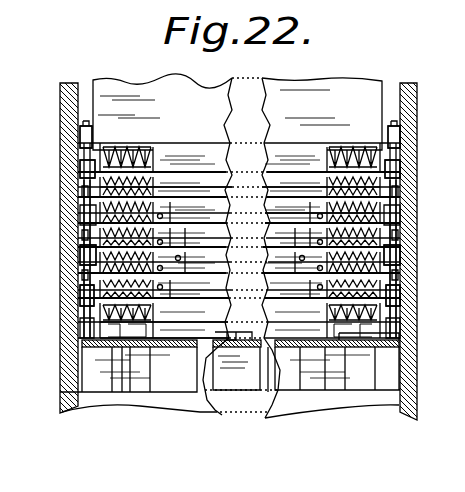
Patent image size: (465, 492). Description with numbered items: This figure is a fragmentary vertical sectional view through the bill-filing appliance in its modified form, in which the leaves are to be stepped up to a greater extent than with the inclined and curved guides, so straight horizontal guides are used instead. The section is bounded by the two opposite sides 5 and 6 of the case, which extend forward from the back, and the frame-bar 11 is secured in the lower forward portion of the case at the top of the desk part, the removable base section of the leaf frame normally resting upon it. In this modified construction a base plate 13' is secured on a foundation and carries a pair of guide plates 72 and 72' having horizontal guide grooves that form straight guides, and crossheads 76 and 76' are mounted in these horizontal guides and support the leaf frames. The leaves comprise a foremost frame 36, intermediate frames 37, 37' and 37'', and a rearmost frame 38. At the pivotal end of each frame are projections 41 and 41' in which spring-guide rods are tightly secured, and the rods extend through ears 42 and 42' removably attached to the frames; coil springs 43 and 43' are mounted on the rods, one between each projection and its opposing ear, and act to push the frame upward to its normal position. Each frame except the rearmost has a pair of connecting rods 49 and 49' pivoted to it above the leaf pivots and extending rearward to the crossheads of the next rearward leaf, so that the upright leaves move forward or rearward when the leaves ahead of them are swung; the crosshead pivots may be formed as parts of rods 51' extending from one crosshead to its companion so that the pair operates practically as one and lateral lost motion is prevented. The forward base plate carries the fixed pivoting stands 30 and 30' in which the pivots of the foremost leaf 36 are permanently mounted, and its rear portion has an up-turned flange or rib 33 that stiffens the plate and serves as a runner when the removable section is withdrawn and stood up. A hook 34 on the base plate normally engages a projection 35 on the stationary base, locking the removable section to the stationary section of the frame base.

The side 6 is at (68, 83).
The side 5 is at (415, 99).
The rearmost frame 38 is at (177, 90).
The intermediate frame 37' is at (166, 174).
The intermediate frame 37'' is at (321, 144).
The intermediate frame 37 is at (194, 361).
The rod 51' is at (322, 157).
The crosshead 76 is at (421, 213).
The crosshead 76' is at (58, 224).
The guide plate 72 is at (422, 172).
The guide plate 72' is at (58, 172).
The connecting rod 49 is at (418, 259).
The connecting rod 49' is at (59, 259).
The projection 35 is at (231, 370).
The hook 34 is at (236, 369).
The up-turned flange or rib 33 is at (183, 330).
The pivoting stand 30 is at (337, 357).
The pivoting stand 30' is at (128, 363).
The projection 41 is at (375, 397).
The projection 41' is at (86, 398).
The ear 42 is at (323, 397).
The ear 42' is at (167, 393).
The coil spring 43 is at (360, 412).
The coil spring 43' is at (112, 410).
The base plate 13' is at (128, 386).
The foremost frame 36 is at (268, 350).
The frame-bar 11 is at (320, 347).